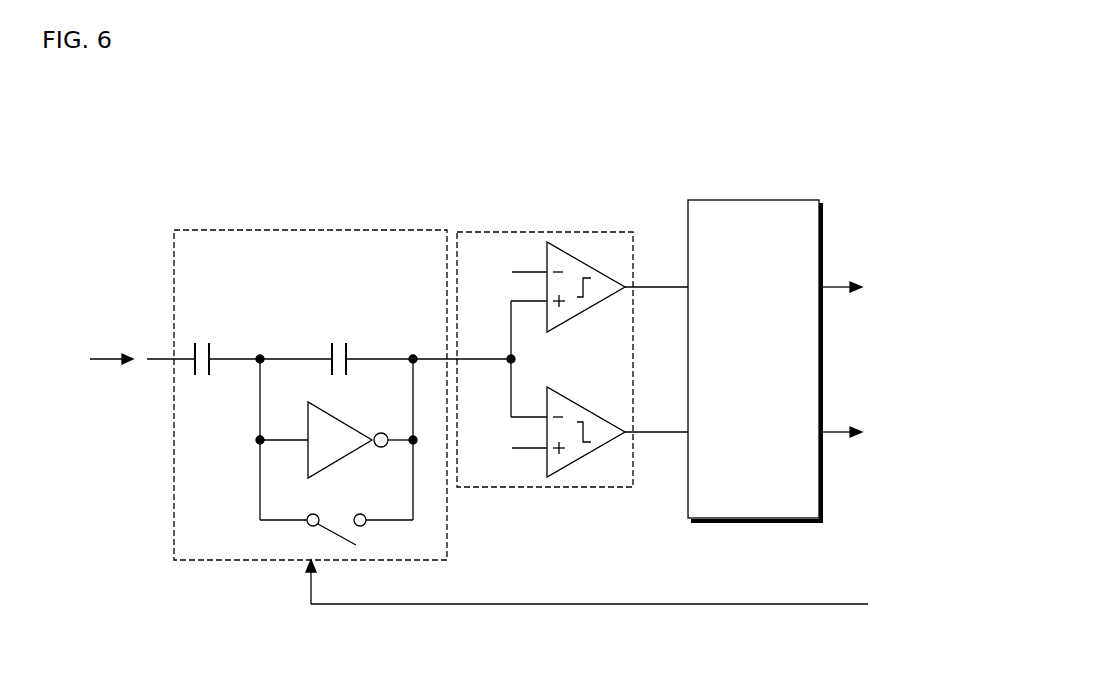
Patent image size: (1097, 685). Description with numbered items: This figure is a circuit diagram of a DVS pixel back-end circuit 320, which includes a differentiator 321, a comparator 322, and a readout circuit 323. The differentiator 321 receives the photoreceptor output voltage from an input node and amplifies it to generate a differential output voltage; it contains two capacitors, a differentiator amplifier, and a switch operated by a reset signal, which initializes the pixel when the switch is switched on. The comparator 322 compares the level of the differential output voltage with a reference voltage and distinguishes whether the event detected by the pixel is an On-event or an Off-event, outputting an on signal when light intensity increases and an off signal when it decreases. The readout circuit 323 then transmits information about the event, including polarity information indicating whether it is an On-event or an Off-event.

The DVS pixel back-end circuit 320 is at (528, 121).
The differentiator 321 is at (310, 230).
The comparator 322 is at (545, 232).
The readout circuit 323 is at (753, 200).